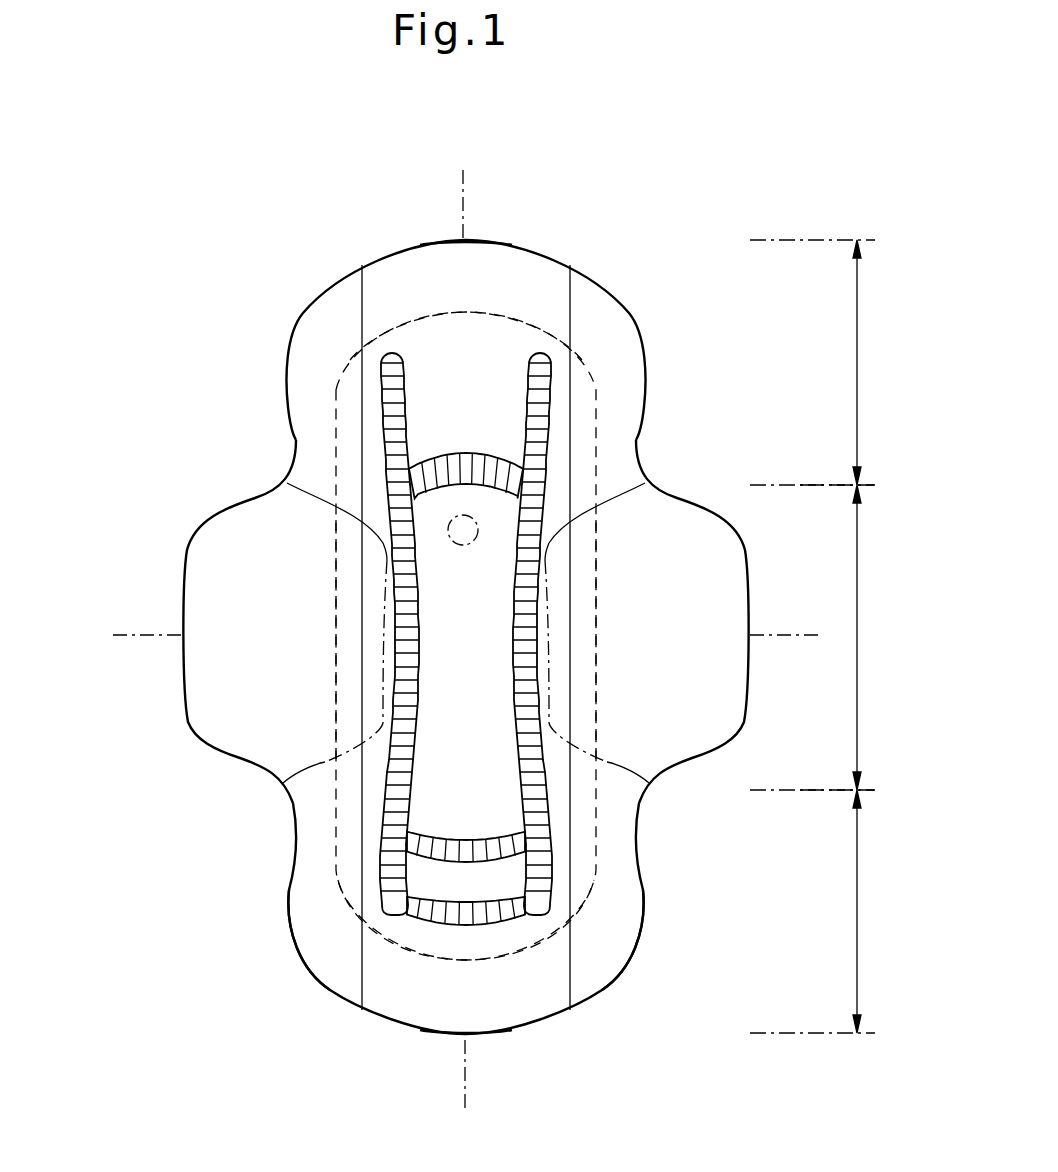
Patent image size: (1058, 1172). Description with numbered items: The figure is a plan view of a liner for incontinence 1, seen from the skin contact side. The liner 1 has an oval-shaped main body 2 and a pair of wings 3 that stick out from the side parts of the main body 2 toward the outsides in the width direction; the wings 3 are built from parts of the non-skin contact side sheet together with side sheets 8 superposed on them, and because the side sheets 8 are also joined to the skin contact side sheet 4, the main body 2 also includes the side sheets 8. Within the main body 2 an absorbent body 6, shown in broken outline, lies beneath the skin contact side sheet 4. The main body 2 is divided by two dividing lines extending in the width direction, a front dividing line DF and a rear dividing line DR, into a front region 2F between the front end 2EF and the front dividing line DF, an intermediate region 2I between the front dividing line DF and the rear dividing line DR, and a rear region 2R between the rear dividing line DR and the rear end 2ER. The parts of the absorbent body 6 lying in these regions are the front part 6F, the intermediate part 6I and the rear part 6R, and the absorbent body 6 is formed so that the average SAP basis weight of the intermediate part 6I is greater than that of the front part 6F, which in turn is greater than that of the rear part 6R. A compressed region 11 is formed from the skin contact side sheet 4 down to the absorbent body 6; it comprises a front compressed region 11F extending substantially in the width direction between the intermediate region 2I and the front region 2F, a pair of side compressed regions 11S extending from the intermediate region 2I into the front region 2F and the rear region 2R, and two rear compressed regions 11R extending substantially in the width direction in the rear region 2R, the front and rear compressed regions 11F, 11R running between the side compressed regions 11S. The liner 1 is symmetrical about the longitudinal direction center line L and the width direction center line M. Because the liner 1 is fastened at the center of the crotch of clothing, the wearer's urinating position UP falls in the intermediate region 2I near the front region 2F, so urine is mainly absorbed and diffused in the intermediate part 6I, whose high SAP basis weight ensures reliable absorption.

The liner for incontinence 1 is at (675, 260).
The main body 2 is at (540, 252).
The front end 2EF is at (448, 240).
The rear end 2ER is at (447, 1033).
The front region 2F is at (821, 362).
The intermediate region 2I is at (819, 637).
The rear region 2R is at (823, 911).
The wings 3 is at (224, 510).
The skin contact side sheet 4 is at (388, 272).
The absorbent body 6 is at (347, 370).
The front part 6F is at (388, 345).
The intermediate part 6I is at (347, 677).
The rear part 6R is at (348, 845).
The side sheets 8 is at (318, 945).
The compressed region 11 is at (439, 712).
The front compressed region 11F is at (418, 465).
The side compressed regions 11S is at (398, 708).
The rear compressed regions 11R is at (482, 930).
The urinating position UP is at (450, 538).
The longitudinal direction center line L is at (464, 639).
The width direction center line M is at (463, 636).
The front dividing line DF is at (787, 484).
The rear dividing line DR is at (803, 791).